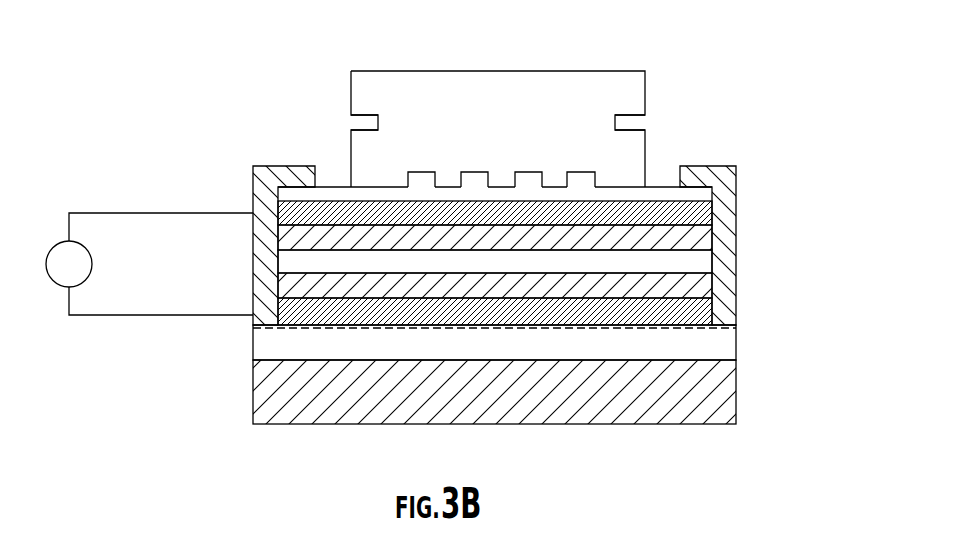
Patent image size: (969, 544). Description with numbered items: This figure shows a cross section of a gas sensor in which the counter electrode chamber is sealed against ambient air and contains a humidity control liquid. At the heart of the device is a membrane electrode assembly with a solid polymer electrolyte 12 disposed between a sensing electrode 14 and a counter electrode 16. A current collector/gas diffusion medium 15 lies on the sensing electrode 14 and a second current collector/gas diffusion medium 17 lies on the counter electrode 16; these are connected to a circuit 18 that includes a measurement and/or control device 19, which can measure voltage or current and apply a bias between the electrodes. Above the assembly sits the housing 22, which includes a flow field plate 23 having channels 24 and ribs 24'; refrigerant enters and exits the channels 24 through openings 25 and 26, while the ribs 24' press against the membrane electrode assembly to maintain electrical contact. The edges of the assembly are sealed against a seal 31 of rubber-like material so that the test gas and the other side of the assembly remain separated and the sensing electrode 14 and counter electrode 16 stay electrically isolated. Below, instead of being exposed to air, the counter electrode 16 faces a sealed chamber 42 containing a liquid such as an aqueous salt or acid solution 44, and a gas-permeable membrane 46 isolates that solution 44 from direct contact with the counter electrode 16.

The solid polymer electrolyte 12 is at (702, 264).
The sensing electrode 14 is at (705, 237).
The current collector/gas diffusion medium 15 is at (708, 210).
The counter electrode 16 is at (705, 287).
The current collector/gas diffusion medium 17 is at (690, 308).
The circuit 18 is at (120, 213).
The measurement and/or control device 19 is at (47, 250).
The housing 22 is at (397, 71).
The flow field plate 23 is at (447, 91).
The gas channels 24 is at (501, 105).
The ribs 24' is at (495, 110).
The opening 25 is at (642, 120).
The opening 26 is at (350, 120).
The seal 31 is at (772, 200).
The sealed chamber 42 is at (267, 343).
The aqueous salt or acid solution 44 is at (597, 403).
The gas-permeable membrane 46 is at (378, 328).